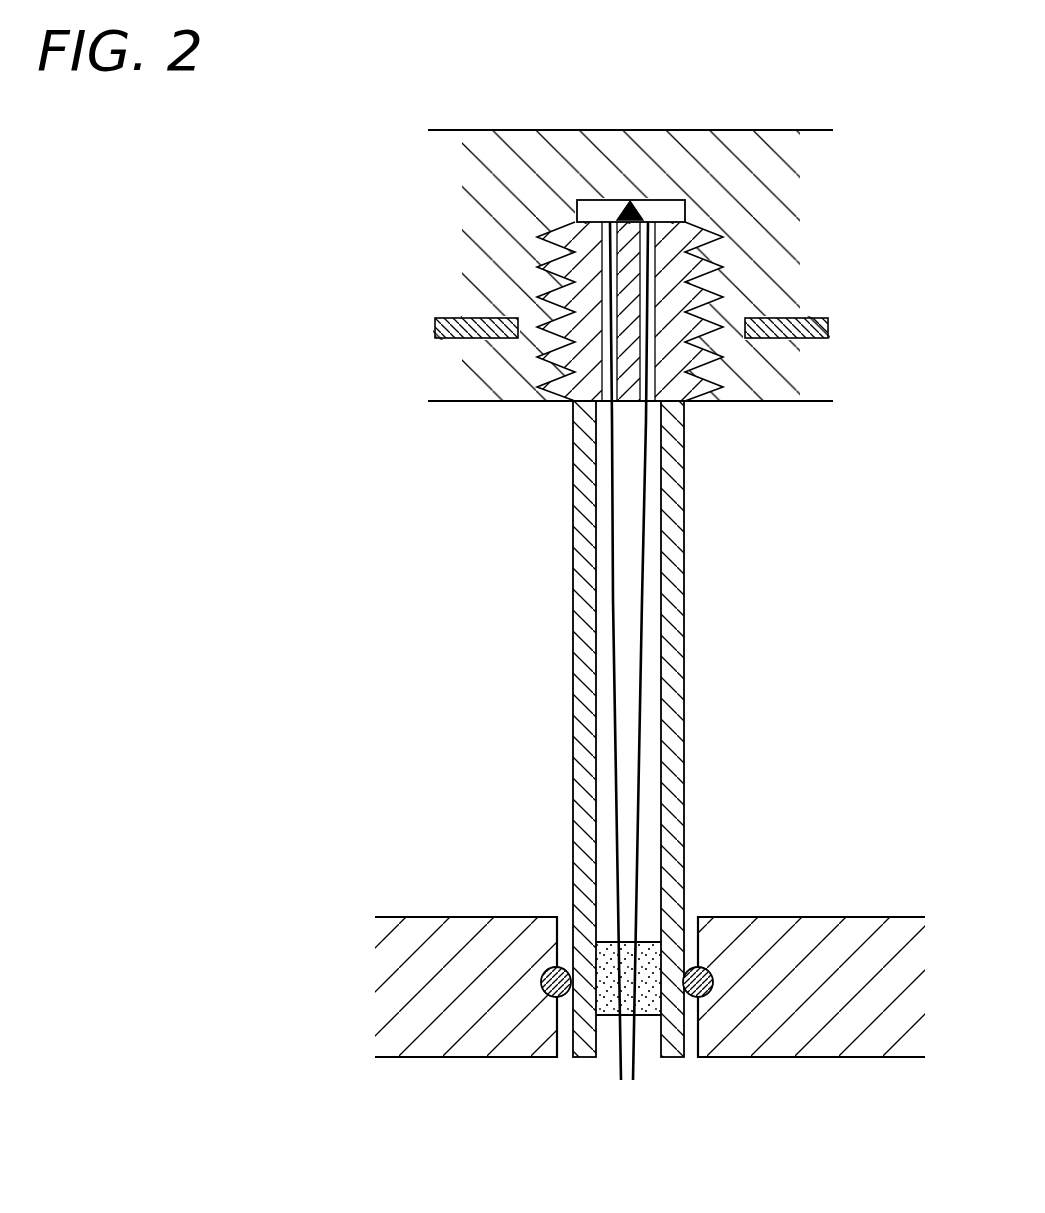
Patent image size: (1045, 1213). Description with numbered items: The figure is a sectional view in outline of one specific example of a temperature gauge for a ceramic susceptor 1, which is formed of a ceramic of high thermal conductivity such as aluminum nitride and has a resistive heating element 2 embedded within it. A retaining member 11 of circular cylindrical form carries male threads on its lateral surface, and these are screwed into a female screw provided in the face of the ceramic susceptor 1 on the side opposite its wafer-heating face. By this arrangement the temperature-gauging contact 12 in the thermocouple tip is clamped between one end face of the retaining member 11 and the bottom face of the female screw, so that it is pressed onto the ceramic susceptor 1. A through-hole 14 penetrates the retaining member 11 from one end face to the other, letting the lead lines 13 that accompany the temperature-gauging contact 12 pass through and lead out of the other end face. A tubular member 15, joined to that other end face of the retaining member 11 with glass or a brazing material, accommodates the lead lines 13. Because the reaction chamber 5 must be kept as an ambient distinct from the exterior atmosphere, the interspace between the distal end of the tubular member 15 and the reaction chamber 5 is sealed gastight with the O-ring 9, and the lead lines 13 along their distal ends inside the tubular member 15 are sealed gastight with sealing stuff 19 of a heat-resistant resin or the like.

The ceramic susceptor 1 is at (483, 232).
The resistive heating element 2 is at (433, 332).
The reaction chamber 5 is at (421, 917).
The O-ring 9 is at (543, 978).
The retaining member 11 is at (700, 397).
The temperature-gauging contact 12 is at (633, 197).
The lead lines 13 is at (642, 598).
The through-hole 14 is at (680, 240).
The tubular member 15 is at (686, 628).
The sealing stuff 19 is at (650, 933).